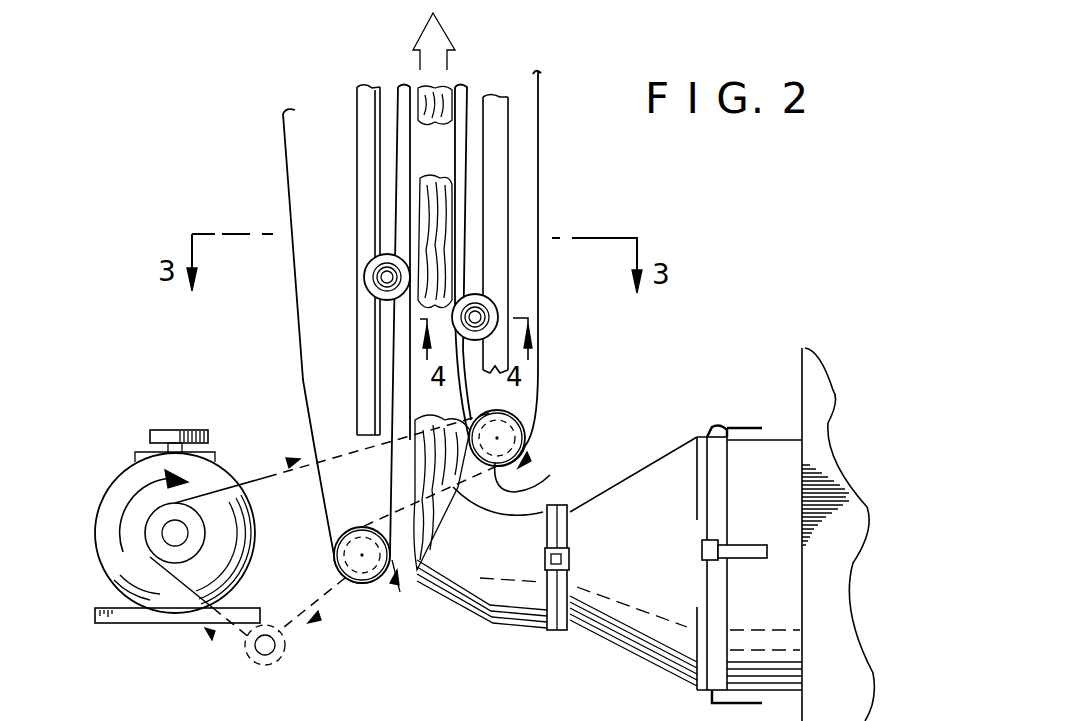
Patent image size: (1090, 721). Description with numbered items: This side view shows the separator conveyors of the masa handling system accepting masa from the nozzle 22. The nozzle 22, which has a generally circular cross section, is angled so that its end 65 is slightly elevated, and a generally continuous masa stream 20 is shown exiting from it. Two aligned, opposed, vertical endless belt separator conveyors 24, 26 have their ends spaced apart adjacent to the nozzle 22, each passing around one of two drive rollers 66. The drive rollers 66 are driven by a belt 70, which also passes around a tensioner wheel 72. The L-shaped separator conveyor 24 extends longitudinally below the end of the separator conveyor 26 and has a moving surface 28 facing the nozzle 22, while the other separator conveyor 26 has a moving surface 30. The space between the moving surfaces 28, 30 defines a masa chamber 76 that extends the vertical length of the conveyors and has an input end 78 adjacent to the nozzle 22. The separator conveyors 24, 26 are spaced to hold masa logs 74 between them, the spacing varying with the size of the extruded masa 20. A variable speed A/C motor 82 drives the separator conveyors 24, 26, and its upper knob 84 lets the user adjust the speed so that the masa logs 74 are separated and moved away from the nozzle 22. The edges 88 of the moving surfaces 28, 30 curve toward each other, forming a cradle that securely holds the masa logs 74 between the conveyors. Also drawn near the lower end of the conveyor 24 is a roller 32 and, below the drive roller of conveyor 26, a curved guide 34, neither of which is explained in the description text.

The masa stream 20 is at (406, 588).
The nozzle 22 is at (523, 628).
The separator conveyor 24 is at (290, 341).
The separator conveyor 26 is at (548, 350).
The moving surface 28 is at (412, 316).
The moving surface 30 is at (460, 393).
The belt roller 32 is at (368, 593).
The curved guide 34 is at (512, 487).
The end of the nozzle 65 is at (427, 590).
The drive rollers 66 is at (500, 412).
The belt 70 is at (263, 470).
The tensioner wheel 72 is at (273, 662).
The masa logs 74 is at (450, 90).
The masa chamber 76 is at (438, 145).
The input end 78 is at (449, 459).
The variable speed A/C motor 82 is at (117, 483).
The upper knob 84 is at (167, 430).
The edges 88 is at (412, 715).